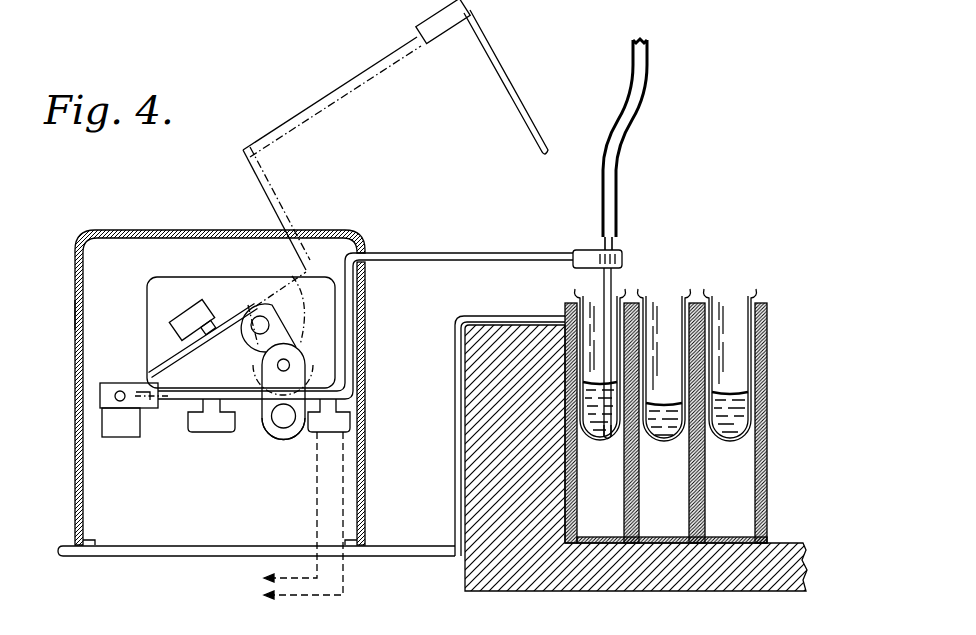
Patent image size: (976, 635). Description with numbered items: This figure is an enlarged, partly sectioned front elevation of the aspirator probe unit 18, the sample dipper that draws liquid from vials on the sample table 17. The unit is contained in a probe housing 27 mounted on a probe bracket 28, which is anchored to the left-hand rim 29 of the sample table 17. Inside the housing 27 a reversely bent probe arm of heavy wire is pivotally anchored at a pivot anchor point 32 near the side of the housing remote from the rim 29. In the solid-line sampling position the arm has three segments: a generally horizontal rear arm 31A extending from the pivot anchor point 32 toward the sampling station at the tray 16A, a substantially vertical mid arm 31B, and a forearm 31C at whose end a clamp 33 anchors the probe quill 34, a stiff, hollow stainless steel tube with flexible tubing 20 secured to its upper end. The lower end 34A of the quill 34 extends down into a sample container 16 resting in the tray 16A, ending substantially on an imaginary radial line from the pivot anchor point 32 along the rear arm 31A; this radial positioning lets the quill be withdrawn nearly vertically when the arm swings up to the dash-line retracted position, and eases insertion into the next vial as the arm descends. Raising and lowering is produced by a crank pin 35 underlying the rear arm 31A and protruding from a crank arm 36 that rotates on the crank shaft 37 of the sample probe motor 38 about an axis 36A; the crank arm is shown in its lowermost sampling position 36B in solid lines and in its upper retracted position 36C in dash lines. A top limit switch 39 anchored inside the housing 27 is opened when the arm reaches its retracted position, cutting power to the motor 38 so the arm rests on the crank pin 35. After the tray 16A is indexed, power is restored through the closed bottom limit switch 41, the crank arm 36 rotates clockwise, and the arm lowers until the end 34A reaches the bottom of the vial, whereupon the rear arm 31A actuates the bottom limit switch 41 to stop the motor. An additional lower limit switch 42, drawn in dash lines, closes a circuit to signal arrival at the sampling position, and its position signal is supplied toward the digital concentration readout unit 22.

The sample container 16 is at (757, 300).
The sample tray 16A is at (570, 303).
The sample table 17 is at (490, 478).
The aspirator probe unit 18 is at (147, 226).
The flexible tubing 20 is at (630, 100).
The digital concentration readout unit 22 is at (258, 524).
The probe housing 27 is at (75, 311).
The probe bracket 28 is at (402, 556).
The left-hand rim 29 is at (488, 336).
The rear arm 31A is at (168, 358).
The mid arm 31B is at (268, 188).
The forearm 31C is at (321, 86).
The pivot anchor point 32 is at (120, 402).
The clamp 33 is at (623, 258).
The probe quill 34 is at (497, 58).
The lower end of quill 34A is at (550, 147).
The crank pin 35 is at (282, 428).
The crank arm 36 is at (312, 375).
The axis of crank shaft 36A is at (290, 343).
The lowermost sampling position of crank arm 36B is at (270, 432).
The upper retracted position of crank arm 36C is at (293, 278).
The crank shaft 37 is at (284, 360).
The sample probe motor 38 is at (147, 298).
The top limit switch 39 is at (185, 306).
The bottom limit switch 41 is at (208, 432).
The lower limit switch 42 is at (305, 434).